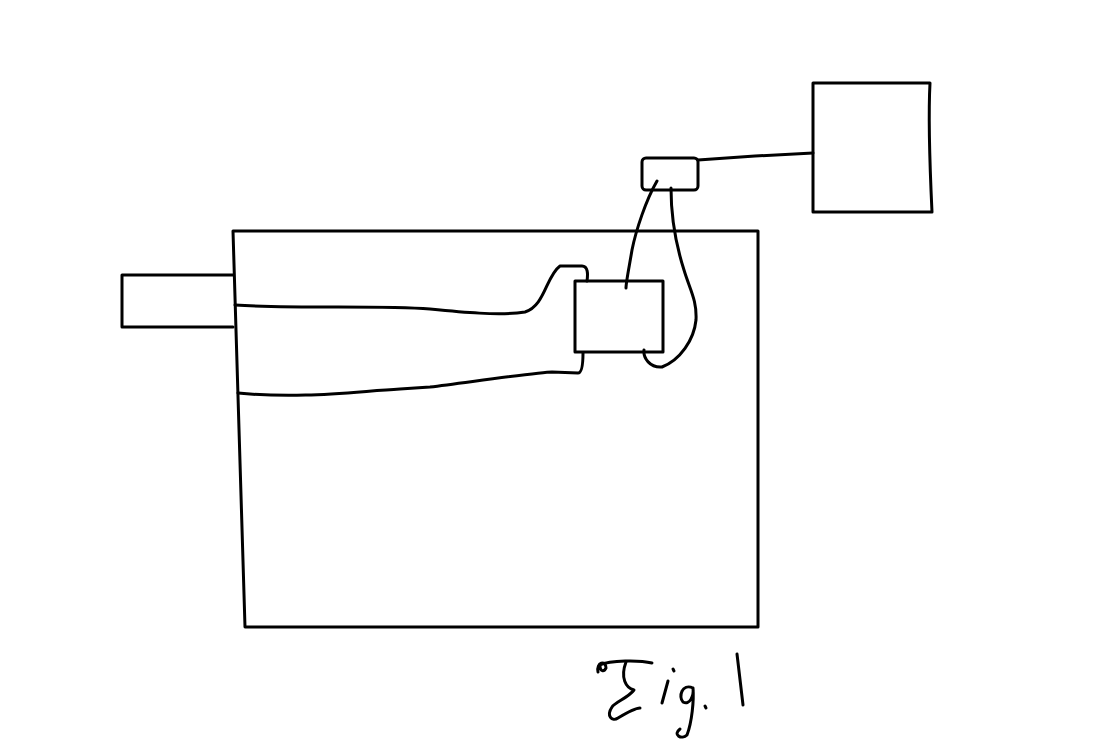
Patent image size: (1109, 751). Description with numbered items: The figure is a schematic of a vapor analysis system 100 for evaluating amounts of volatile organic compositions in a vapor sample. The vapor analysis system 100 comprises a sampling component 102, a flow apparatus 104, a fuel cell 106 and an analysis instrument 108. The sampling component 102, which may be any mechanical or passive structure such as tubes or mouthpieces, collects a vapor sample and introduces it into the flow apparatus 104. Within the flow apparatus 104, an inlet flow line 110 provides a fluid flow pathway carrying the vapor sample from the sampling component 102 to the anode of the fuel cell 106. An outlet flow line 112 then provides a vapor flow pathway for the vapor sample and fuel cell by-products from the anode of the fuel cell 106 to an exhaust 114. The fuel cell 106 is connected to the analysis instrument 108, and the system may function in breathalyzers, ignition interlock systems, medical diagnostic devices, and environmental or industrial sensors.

The vapor analysis system 100 is at (347, 153).
The sampling component 102 is at (160, 330).
The flow apparatus 104 is at (247, 445).
The fuel cell 106 is at (608, 298).
The analysis instrument 108 is at (813, 118).
The inlet flow line 110 is at (323, 307).
The outlet flow line 112 is at (383, 395).
The exhaust 114 is at (230, 372).